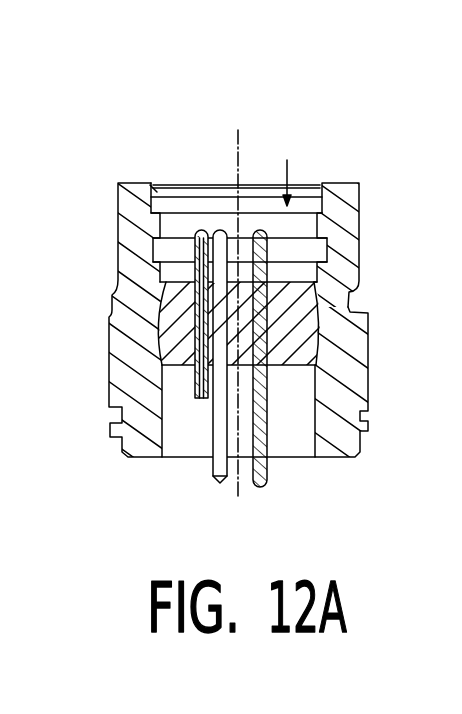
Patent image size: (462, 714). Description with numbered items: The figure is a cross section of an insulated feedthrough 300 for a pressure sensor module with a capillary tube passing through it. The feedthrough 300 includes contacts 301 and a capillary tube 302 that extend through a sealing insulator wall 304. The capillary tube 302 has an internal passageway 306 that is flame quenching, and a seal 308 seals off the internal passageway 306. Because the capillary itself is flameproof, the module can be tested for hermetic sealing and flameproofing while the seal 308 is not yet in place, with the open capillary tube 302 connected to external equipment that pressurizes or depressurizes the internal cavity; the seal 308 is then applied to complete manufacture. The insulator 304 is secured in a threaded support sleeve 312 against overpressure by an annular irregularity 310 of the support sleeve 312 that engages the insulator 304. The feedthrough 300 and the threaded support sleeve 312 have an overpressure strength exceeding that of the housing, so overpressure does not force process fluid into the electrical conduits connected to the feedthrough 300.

The feedthrough 300 is at (117, 164).
The contacts 301 is at (268, 470).
The capillary tube 302 is at (195, 383).
The sealing insulator wall 304 is at (293, 298).
The internal passageway 306 is at (197, 268).
The seal 308 is at (203, 230).
The annular irregularity 310 is at (326, 330).
The threaded support sleeve 312 is at (343, 372).